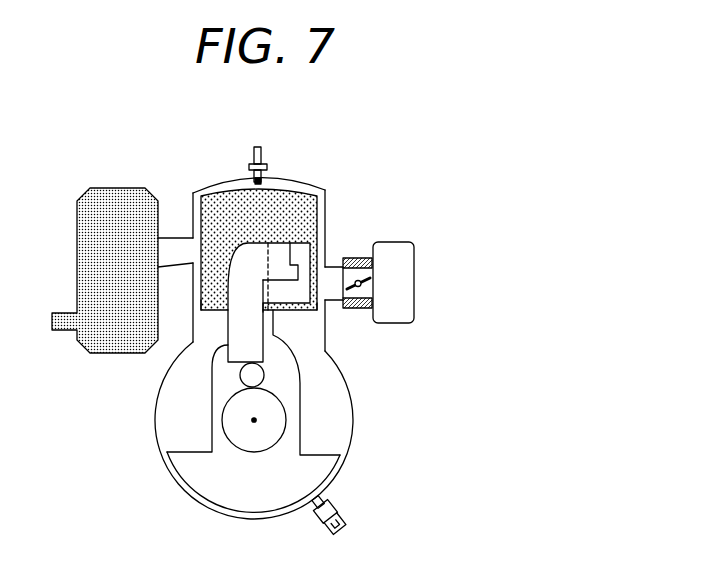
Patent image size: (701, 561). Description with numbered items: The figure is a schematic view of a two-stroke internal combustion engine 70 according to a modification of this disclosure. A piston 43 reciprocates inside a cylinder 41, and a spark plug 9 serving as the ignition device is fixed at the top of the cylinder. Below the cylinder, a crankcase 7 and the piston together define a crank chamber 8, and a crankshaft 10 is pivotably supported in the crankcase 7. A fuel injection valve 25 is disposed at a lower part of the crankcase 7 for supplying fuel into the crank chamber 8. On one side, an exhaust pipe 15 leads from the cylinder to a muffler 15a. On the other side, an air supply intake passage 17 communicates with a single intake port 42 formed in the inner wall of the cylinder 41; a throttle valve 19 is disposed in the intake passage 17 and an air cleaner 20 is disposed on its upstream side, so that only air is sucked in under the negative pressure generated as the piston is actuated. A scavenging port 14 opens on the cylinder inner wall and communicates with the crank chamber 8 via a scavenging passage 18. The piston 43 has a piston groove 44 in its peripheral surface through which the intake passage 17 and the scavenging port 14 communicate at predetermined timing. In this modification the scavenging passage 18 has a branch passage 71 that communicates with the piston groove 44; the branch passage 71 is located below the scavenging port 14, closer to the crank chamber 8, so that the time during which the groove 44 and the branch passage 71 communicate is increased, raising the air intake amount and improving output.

The crankcase 7 is at (155, 448).
The crank chamber 8 is at (200, 417).
The spark plug 9 is at (262, 155).
The crankshaft 10 is at (253, 420).
The scavenging port 14 is at (273, 252).
The exhaust pipe 15 is at (173, 237).
The muffler 15a is at (117, 187).
The intake passage 17 is at (355, 257).
The scavenging passage 18 is at (248, 293).
The throttle valve 19 is at (370, 283).
The air cleaner 20 is at (415, 265).
The fuel injection valve 25 is at (330, 502).
The cylinder 41 is at (325, 242).
The intake port 42 is at (323, 282).
The piston 43 is at (212, 313).
The piston groove 44 is at (298, 267).
The engine 70 is at (215, 182).
The branch passage 71 is at (282, 292).